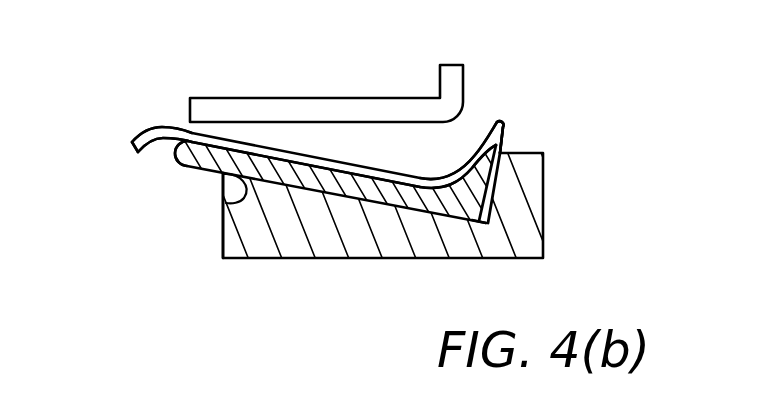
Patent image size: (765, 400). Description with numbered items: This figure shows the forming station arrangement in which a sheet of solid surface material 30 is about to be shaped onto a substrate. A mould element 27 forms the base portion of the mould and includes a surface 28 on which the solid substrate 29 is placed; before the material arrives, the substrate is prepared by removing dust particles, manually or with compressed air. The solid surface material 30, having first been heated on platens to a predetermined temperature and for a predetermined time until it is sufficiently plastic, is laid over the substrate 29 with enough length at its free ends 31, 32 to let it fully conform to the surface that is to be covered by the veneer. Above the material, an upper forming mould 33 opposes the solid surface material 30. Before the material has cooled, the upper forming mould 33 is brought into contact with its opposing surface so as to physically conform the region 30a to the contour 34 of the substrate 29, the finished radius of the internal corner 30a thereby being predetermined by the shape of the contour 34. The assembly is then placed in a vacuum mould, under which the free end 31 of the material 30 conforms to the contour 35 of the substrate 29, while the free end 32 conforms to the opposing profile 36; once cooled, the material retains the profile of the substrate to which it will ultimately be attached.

The mould element 27 is at (535, 190).
The surface 28 is at (223, 197).
The solid substrate 29 is at (193, 136).
The solid surface material 30 is at (303, 154).
The region 30a is at (485, 224).
The free end 31 is at (136, 146).
The free end 32 is at (496, 120).
The upper forming mould 33 is at (467, 82).
The contour 34 is at (472, 192).
The contour 35 is at (175, 165).
The opposing profile 36 is at (498, 136).